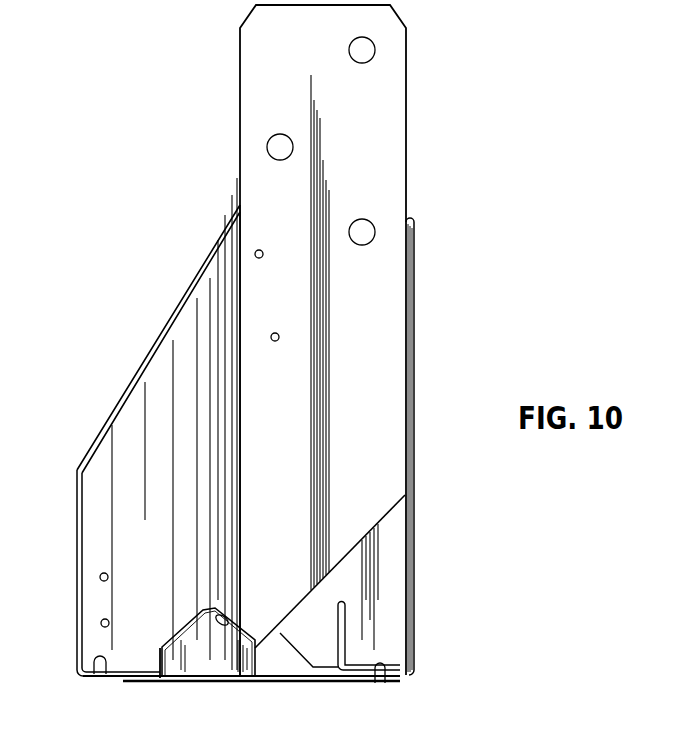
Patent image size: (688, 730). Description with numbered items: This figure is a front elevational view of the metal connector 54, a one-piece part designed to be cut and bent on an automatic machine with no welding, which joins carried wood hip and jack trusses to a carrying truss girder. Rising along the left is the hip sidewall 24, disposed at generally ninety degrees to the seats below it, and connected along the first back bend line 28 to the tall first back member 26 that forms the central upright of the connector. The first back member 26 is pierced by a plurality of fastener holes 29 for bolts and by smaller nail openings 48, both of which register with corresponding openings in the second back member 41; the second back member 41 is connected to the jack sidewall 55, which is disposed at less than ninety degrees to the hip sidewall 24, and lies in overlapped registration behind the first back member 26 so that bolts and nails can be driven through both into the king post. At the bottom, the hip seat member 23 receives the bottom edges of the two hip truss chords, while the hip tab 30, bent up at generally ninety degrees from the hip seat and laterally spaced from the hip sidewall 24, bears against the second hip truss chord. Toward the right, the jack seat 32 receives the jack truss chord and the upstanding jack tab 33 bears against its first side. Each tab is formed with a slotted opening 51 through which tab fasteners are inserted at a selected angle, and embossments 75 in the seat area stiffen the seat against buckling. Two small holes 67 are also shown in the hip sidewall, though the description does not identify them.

The first back member 26 is at (284, 47).
The metal connector 54 is at (407, 110).
The fastener holes 29 is at (362, 63).
The nail openings 48 is at (261, 258).
The first back bend line 28 is at (244, 392).
The hip sidewall 24 is at (118, 493).
The fastener holes 67 is at (108, 620).
The hip seat member 23 is at (95, 672).
The hip tab 30 is at (200, 660).
The embossments 75 is at (208, 687).
The slotted opening 51 is at (227, 615).
The jack sidewall 55 is at (408, 500).
The second back member 41 is at (386, 557).
The jack tab 33 is at (338, 622).
The jack seat 32 is at (383, 683).